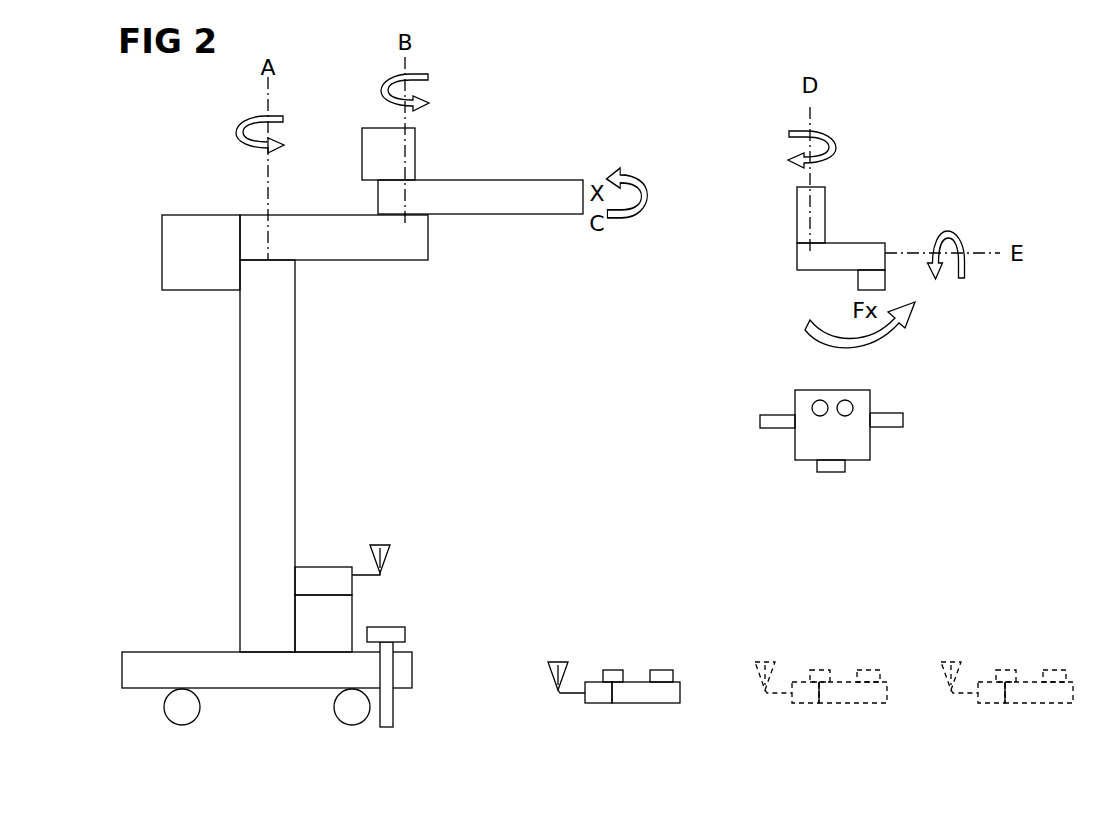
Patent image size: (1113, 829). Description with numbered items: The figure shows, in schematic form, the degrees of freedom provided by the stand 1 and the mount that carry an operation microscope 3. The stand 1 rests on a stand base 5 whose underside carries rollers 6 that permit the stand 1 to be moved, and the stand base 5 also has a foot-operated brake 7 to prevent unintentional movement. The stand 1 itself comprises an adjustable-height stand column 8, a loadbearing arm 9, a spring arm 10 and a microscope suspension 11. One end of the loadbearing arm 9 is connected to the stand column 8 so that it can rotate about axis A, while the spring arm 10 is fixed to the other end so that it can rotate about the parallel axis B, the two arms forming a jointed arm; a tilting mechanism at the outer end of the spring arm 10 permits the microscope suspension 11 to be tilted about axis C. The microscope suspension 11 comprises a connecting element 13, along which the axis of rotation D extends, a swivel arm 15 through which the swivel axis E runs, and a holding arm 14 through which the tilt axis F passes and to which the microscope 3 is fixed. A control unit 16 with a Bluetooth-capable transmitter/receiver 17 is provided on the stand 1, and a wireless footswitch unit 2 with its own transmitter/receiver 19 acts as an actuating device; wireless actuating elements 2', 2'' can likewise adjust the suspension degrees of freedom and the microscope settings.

The stand 1 is at (180, 157).
The wireless footswitch unit 2 is at (614, 707).
The wireless actuating element 2' is at (821, 707).
The wireless actuating element 2'' is at (1007, 707).
The operation microscope 3 is at (872, 442).
The stand base 5 is at (162, 667).
The rollers 6 is at (168, 707).
The foot-operated brake 7 is at (402, 633).
The stand column 8 is at (248, 446).
The loadbearing arm 9 is at (378, 258).
The spring arm 10 is at (480, 183).
The microscope suspension 11 is at (908, 148).
The connecting element 13 is at (818, 202).
The holding arm 14 is at (858, 277).
The swivel arm 15 is at (870, 252).
The control unit 16 is at (368, 152).
The transmitter/receiver 17 is at (166, 256).
The transmitter/receiver 19 is at (602, 703).